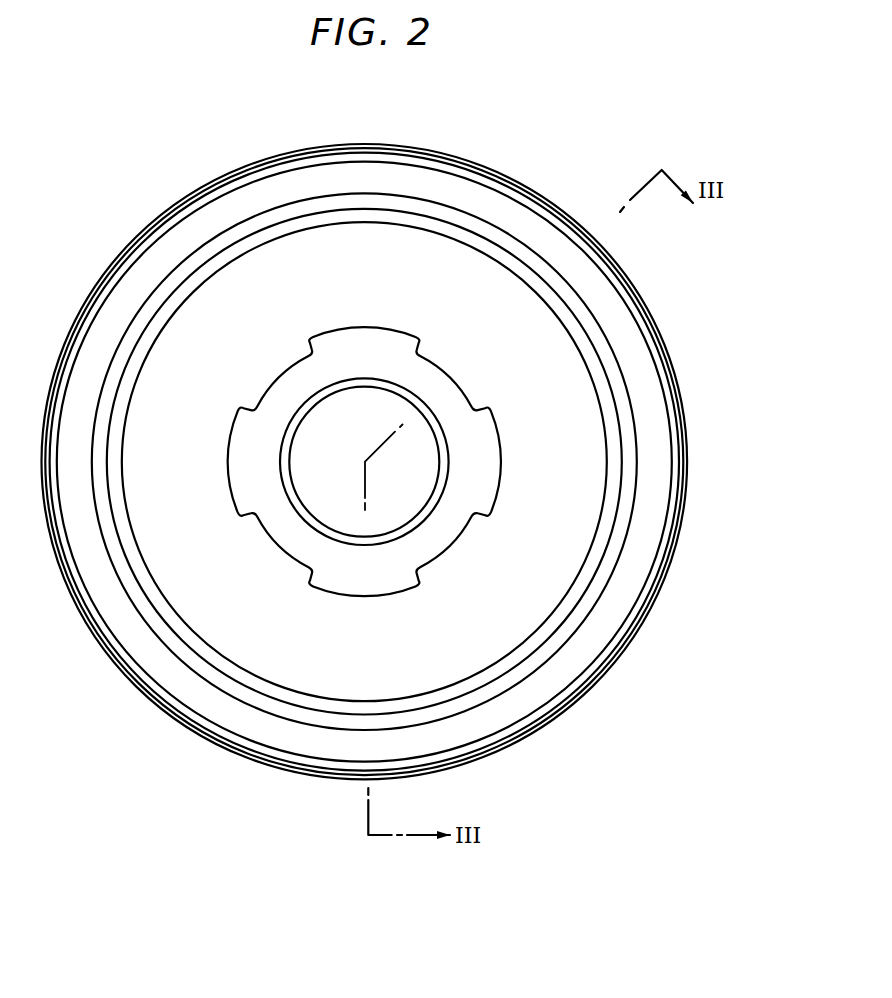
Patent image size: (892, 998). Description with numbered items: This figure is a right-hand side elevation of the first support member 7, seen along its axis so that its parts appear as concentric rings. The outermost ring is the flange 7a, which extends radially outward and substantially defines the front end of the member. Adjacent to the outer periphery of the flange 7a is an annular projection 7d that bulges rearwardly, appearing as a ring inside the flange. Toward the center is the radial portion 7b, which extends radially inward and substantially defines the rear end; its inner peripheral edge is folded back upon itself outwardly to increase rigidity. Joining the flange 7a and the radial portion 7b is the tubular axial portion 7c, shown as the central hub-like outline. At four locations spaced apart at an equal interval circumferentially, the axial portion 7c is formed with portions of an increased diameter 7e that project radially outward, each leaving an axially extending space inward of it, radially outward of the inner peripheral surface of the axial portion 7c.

The first support member 7 is at (683, 362).
The flange 7a is at (212, 598).
The radial portion 7b is at (433, 535).
The tubular axial portion 7c is at (283, 550).
The annular projection 7d is at (245, 690).
The portions of an increased diameter 7e is at (380, 328).